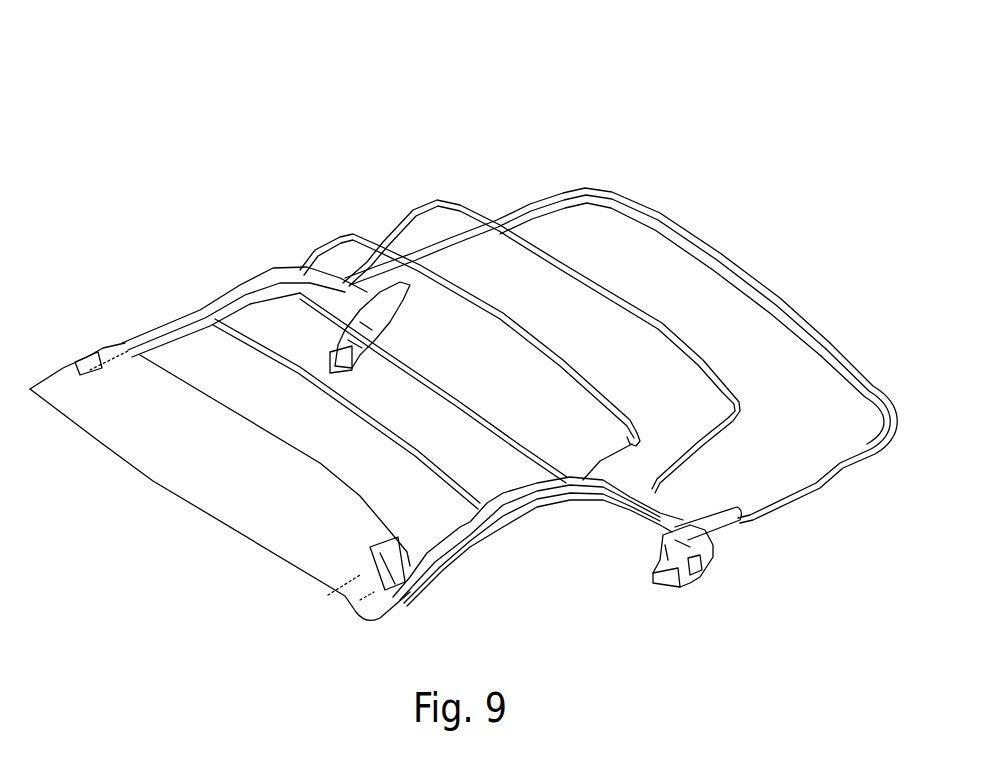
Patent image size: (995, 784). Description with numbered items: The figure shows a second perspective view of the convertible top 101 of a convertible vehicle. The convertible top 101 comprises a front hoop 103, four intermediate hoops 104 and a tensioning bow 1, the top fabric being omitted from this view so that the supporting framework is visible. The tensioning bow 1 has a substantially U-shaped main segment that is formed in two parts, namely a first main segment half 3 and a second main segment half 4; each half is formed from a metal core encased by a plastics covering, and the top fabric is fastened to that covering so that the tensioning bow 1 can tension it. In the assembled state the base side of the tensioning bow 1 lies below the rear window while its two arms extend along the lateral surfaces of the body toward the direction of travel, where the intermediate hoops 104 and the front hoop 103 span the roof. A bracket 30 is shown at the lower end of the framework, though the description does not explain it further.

The tensioning bow 1 is at (754, 161).
The first main segment half 3 is at (830, 333).
The second main segment half 4 is at (613, 197).
The main bearing bracket 30 is at (705, 554).
The convertible top 101 is at (187, 146).
The front hoop 103 is at (212, 478).
The intermediate hoops 104 is at (497, 218).